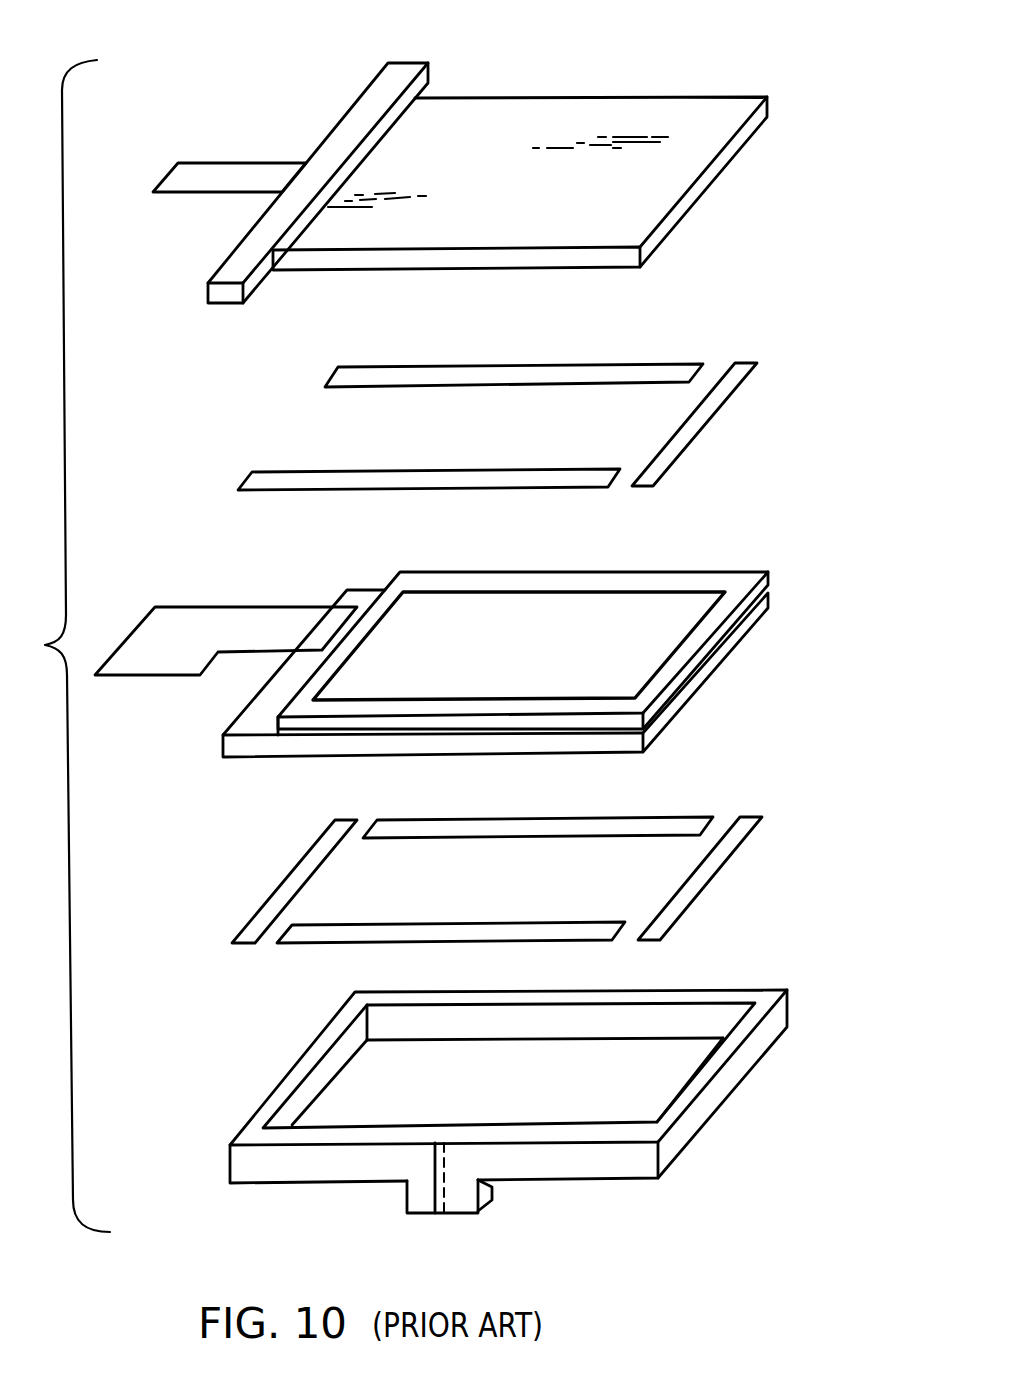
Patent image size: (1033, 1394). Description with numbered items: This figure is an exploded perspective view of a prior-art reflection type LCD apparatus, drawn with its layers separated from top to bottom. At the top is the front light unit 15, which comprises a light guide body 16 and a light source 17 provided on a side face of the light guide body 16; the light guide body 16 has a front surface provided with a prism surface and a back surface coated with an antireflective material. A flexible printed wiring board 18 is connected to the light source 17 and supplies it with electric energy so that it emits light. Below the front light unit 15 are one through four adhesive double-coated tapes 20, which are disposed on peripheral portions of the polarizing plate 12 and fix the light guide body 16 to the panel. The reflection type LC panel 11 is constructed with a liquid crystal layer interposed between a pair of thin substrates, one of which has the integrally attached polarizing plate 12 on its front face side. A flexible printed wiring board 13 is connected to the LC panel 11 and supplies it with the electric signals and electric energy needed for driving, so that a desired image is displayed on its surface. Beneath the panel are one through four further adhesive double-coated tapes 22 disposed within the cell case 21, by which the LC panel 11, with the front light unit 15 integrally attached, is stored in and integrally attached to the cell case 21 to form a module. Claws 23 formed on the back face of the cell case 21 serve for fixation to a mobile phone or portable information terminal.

The reflection type LC panel 11 is at (729, 649).
The polarizing plate 12 is at (664, 603).
The flexible printed wiring board 13 is at (151, 665).
The front light unit 15 is at (545, 114).
The light guide body 16 is at (655, 108).
The light source 17 is at (404, 62).
The flexible printed wiring board 18 is at (180, 186).
The adhesive double-coated tapes 20 is at (737, 366).
The cell case 21 is at (743, 1065).
The adhesive double-coated tapes 22 is at (740, 822).
The claws 23 is at (447, 1203).